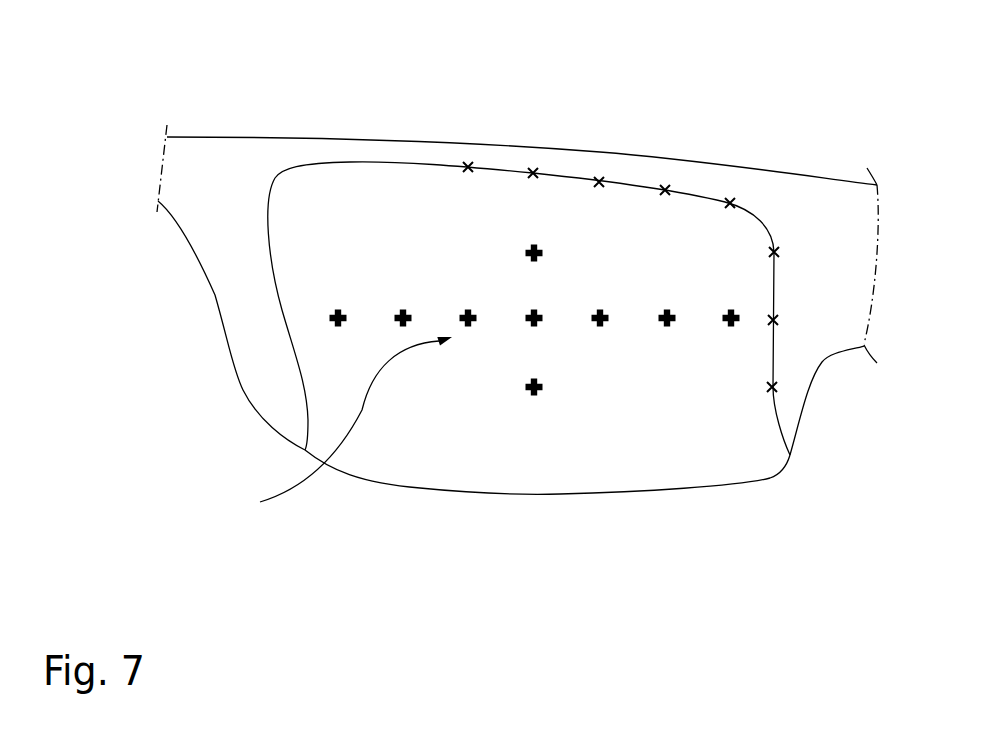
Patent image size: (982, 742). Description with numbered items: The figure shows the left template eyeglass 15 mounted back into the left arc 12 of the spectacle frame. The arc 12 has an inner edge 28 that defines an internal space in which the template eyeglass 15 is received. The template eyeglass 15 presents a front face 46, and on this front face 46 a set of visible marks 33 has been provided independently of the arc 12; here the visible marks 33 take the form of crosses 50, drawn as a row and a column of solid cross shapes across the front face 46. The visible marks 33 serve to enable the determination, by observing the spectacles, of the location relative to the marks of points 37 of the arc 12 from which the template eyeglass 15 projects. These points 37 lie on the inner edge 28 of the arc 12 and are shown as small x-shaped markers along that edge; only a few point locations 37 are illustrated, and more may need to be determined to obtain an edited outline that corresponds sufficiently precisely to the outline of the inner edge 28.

The arc 12 is at (385, 152).
The template eyeglass 15 is at (380, 485).
The inner edge 28 is at (632, 186).
The visible marks 33 is at (340, 428).
The points 37 is at (468, 167).
The front face 46 is at (418, 255).
The crosses 50 is at (603, 321).